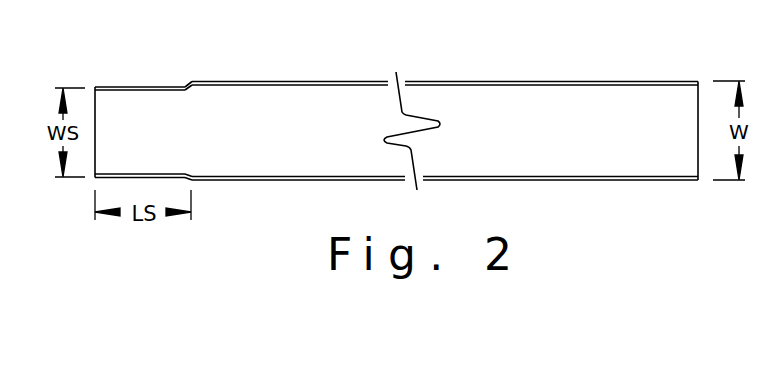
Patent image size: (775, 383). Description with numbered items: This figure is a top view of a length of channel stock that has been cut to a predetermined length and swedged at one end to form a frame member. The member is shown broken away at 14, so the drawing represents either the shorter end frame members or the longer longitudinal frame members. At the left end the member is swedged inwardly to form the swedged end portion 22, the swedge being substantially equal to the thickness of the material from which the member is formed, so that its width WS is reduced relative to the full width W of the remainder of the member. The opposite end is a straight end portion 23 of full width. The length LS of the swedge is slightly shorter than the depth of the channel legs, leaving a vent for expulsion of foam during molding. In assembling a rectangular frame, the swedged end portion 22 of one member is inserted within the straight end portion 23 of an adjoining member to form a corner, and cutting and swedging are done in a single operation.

The broken away portion 14 is at (402, 95).
The swedged end portion 22 is at (162, 85).
The straight end portion 23 is at (555, 80).